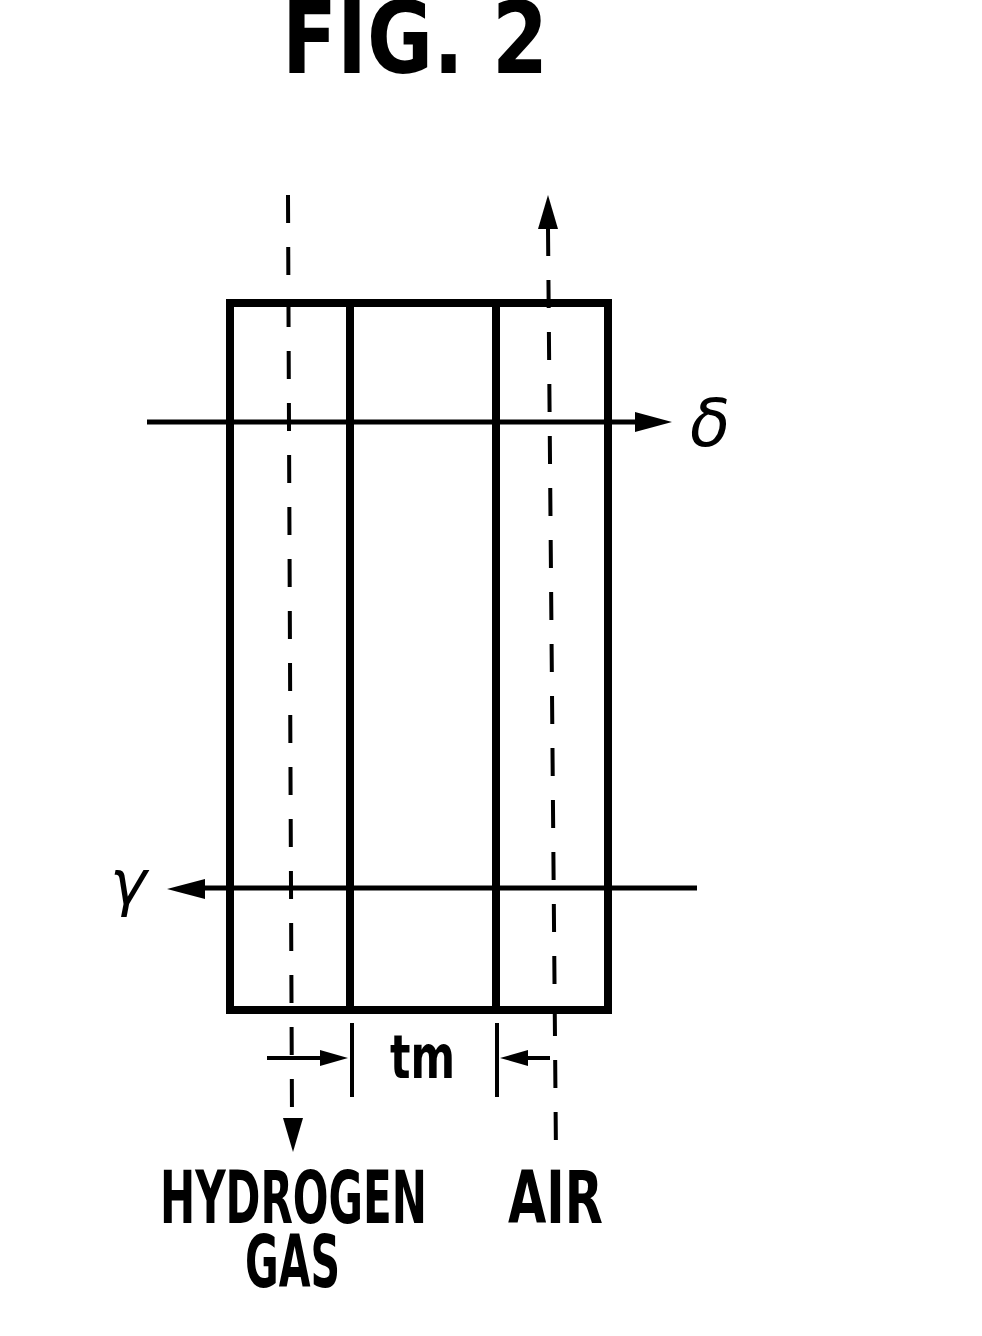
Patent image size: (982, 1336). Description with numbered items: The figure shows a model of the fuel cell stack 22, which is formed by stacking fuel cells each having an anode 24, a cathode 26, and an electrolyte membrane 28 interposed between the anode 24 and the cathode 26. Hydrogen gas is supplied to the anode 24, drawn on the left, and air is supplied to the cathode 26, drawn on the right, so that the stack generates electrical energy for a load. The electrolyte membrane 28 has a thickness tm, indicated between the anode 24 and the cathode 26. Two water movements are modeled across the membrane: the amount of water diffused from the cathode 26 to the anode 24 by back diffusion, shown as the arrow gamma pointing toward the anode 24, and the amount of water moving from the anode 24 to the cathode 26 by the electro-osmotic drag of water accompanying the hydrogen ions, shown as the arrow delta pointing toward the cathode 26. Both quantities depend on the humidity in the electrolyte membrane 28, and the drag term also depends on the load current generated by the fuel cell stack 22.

The fuel cell stack 22 is at (593, 292).
The anode 24 is at (251, 644).
The cathode 26 is at (588, 642).
The electrolyte membrane 28 is at (423, 328).